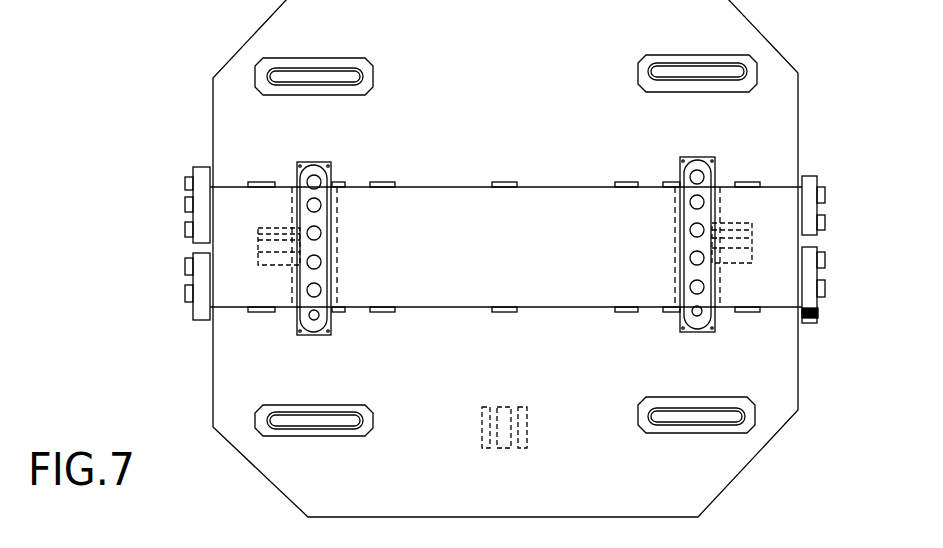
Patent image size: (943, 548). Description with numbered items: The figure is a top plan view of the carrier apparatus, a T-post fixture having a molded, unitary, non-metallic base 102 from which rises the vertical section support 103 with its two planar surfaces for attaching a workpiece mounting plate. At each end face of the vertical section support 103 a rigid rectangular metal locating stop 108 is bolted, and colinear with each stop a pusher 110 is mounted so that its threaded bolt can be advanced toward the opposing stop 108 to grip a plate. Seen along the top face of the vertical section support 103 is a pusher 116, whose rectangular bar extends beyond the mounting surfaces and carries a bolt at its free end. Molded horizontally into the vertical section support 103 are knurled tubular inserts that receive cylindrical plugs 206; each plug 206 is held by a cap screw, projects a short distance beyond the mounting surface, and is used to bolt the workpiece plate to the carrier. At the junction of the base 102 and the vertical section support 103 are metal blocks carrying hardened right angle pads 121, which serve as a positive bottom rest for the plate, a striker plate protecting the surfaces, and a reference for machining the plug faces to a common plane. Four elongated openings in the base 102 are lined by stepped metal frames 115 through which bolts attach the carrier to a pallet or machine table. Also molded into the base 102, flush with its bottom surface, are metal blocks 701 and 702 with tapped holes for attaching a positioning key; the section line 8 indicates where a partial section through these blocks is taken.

The section line 8- 8 is at (280, 362).
The base 102 is at (803, 113).
The vertical section support 103 is at (433, 185).
The locating stop 108 is at (193, 308).
The pusher 110 is at (176, 213).
The stepped metal frame 115 is at (688, 435).
The pusher 116 is at (672, 240).
The right angle pad 121 is at (702, 333).
The cylindrical plug 206 is at (617, 183).
The metal block 701 is at (528, 431).
The metal block 702 is at (258, 262).